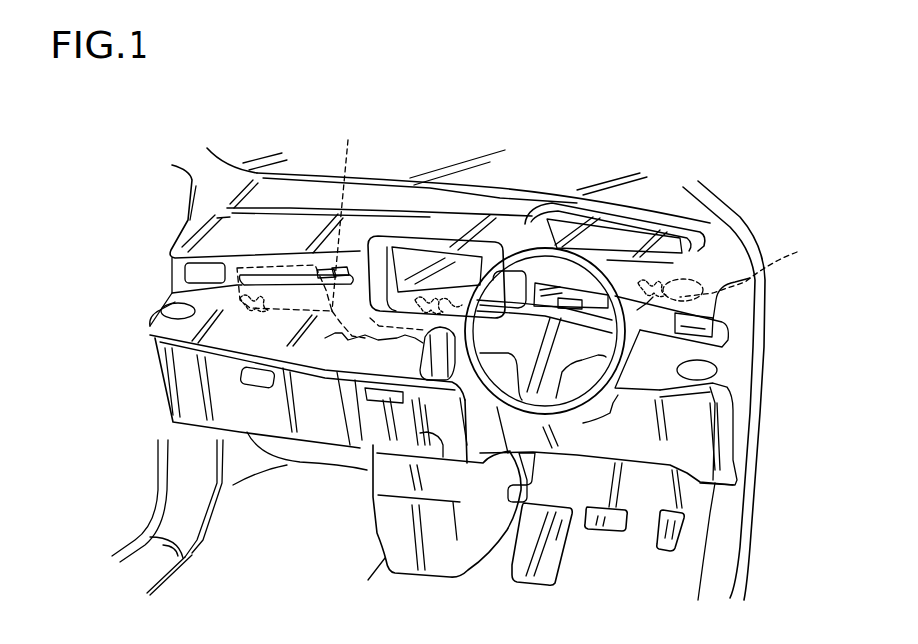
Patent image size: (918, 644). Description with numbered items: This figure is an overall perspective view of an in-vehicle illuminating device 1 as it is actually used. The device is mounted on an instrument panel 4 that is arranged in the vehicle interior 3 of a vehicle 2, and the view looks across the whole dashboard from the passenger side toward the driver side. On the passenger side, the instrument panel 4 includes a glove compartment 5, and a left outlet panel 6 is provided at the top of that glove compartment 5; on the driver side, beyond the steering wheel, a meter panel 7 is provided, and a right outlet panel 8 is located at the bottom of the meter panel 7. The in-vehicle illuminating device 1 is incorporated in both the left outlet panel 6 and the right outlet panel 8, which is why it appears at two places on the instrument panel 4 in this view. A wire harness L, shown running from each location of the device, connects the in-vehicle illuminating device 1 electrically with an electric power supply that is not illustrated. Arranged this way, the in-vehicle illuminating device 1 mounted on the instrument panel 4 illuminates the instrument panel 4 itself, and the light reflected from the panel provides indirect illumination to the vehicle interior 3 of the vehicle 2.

The in-vehicle illuminating device 1 is at (298, 250).
The vehicle 2 is at (786, 333).
The vehicle interior 3 is at (283, 541).
The instrument panel 4 is at (372, 226).
The glove compartment 5 is at (210, 392).
The left outlet panel 6 is at (180, 273).
The meter panel 7 is at (603, 213).
The right outlet panel 8 is at (725, 350).
The wire harness L is at (574, 227).